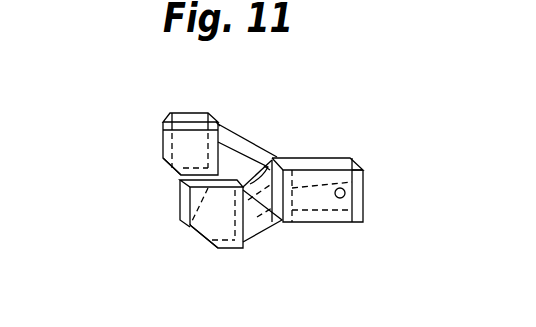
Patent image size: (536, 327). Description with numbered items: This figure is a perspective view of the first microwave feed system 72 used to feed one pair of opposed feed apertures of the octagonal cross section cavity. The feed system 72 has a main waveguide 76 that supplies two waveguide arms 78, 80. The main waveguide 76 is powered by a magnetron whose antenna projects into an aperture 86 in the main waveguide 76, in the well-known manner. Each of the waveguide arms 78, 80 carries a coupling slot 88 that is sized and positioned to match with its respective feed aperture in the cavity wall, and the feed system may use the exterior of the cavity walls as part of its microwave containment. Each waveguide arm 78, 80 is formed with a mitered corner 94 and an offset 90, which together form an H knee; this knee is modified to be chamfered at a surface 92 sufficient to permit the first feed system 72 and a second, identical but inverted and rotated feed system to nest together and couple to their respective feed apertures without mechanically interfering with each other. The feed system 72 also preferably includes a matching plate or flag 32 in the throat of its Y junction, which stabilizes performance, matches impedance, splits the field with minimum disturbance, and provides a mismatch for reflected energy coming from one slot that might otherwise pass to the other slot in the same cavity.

The first microwave feed system 72 is at (337, 141).
The main waveguide 76 is at (350, 158).
The waveguide arm 78 is at (262, 238).
The waveguide arm 80 is at (243, 142).
The aperture 86 is at (342, 198).
The coupling slot 88 is at (181, 132).
The offset 90 is at (218, 124).
The chamfered surface 92 is at (168, 112).
The mitered corner 94 is at (169, 171).
The matching plate or flag 32 is at (365, 170).